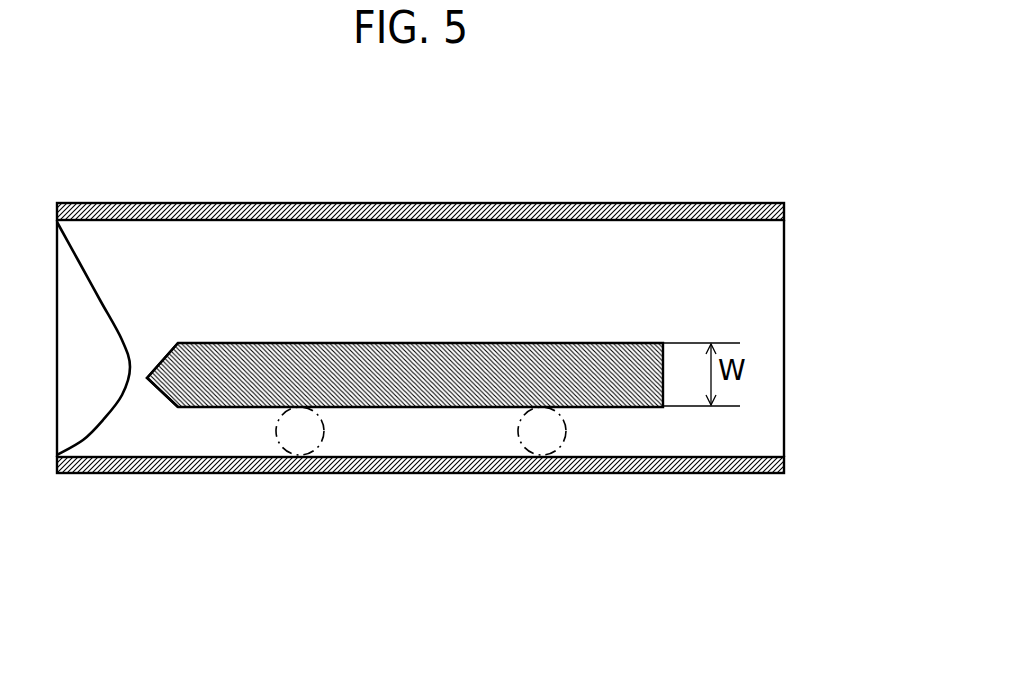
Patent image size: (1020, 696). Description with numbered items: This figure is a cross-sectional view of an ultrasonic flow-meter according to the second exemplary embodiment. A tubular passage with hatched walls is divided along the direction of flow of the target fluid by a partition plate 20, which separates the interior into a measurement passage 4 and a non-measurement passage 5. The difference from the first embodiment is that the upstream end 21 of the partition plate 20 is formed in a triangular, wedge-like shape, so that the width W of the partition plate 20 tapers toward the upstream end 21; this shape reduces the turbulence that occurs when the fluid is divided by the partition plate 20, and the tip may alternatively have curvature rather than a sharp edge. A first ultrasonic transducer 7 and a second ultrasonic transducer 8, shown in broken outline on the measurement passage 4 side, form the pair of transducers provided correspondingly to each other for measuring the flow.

The measurement passage 4 is at (632, 435).
The non-measurement passage 5 is at (599, 278).
The partition plate 20 is at (270, 372).
The upstream end 21 is at (168, 373).
The first ultrasonic transducer 7 is at (302, 438).
The second ultrasonic transducer 8 is at (543, 438).